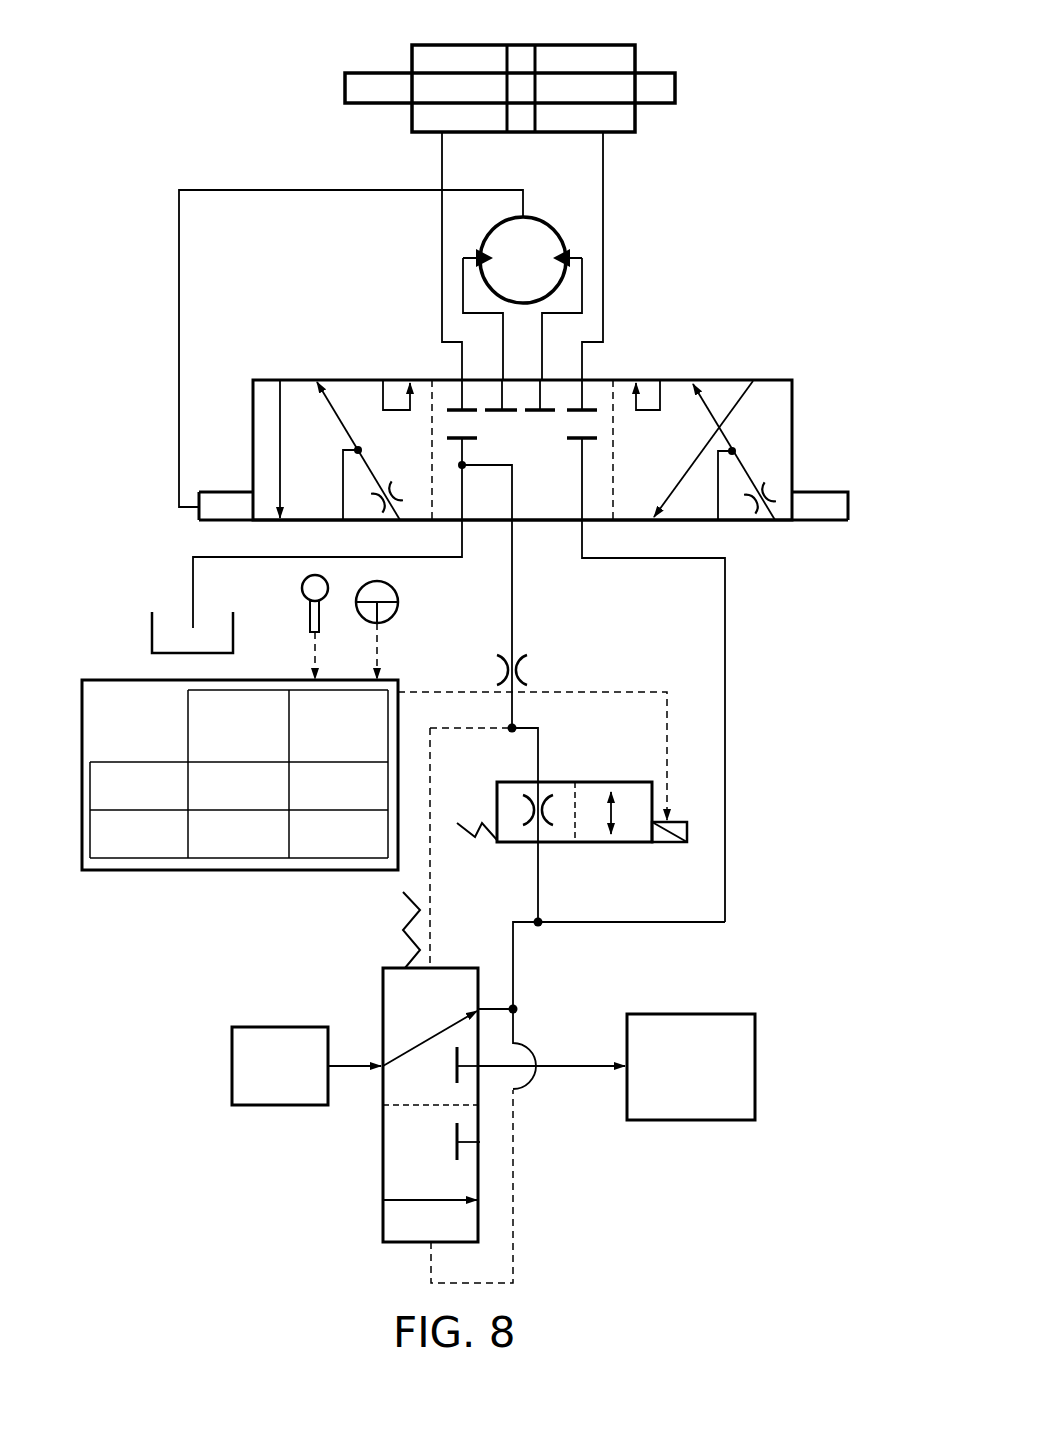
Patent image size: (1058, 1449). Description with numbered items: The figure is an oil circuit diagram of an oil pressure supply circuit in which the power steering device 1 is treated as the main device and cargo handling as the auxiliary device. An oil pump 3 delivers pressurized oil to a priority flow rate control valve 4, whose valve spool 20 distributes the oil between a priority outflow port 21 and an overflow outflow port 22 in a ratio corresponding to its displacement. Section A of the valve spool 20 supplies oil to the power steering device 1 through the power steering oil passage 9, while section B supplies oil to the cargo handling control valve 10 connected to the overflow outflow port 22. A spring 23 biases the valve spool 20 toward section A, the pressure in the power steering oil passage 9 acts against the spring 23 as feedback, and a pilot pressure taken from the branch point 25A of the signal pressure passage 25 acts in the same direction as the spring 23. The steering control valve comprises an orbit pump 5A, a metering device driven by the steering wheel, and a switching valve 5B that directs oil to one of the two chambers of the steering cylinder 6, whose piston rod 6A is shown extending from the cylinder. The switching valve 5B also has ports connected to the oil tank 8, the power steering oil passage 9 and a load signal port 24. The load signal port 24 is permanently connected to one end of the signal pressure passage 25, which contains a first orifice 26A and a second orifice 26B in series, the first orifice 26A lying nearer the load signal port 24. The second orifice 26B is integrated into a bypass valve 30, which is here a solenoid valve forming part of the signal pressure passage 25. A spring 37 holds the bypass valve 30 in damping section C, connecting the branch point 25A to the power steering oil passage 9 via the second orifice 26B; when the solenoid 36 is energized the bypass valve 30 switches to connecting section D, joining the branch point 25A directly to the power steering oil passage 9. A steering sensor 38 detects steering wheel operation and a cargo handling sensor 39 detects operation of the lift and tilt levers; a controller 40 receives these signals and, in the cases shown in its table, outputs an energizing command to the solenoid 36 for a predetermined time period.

The power steering device 1 is at (320, 176).
The oil pump 3 is at (284, 1027).
The priority flow rate control valve 4 is at (358, 986).
The orbit pump 5A is at (541, 228).
The switching valve 5B is at (722, 380).
The steering cylinder 6 is at (590, 55).
The piston rod 6A is at (662, 80).
The oil tank 8 is at (152, 628).
The power steering oil passage 9 is at (725, 588).
The cargo handling control valve 10 is at (691, 1011).
The valve spool 20 is at (376, 1162).
The priority outflow port 21 is at (487, 1006).
The overflow outflow port 22 is at (487, 1070).
The spring 23 is at (407, 923).
The load signal port 24 is at (512, 540).
The signal pressure passage 25 is at (540, 875).
The branch point 25A is at (517, 727).
The first orifice 26A is at (528, 672).
The second orifice 26B is at (520, 807).
The bypass valve 30 is at (611, 776).
The solenoid 36 is at (670, 843).
The spring 37 is at (463, 838).
The steering sensor 38 is at (398, 600).
The cargo handling sensor 39 is at (302, 590).
The controller 40 is at (129, 877).